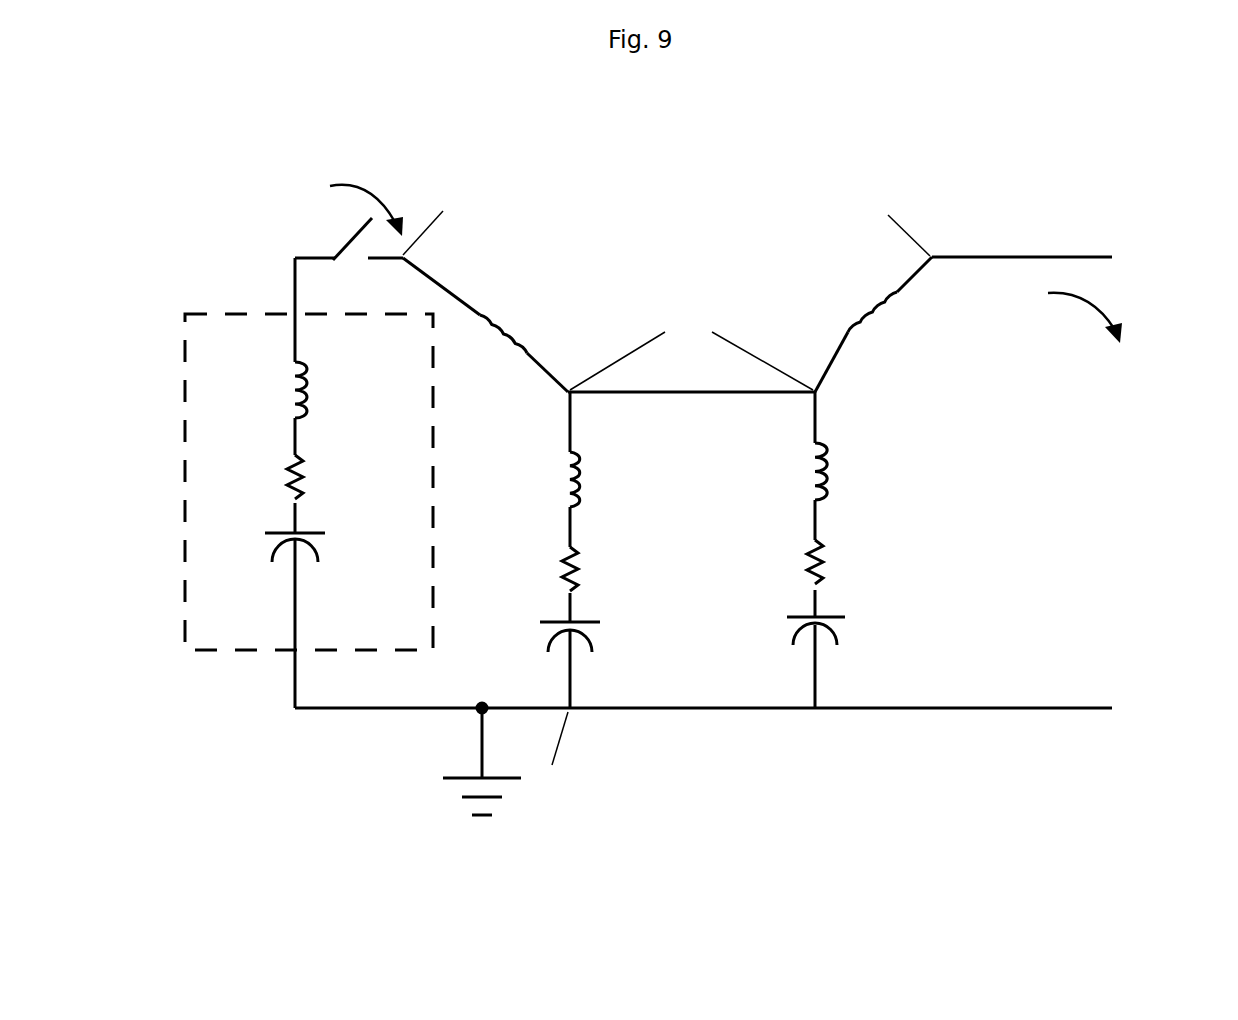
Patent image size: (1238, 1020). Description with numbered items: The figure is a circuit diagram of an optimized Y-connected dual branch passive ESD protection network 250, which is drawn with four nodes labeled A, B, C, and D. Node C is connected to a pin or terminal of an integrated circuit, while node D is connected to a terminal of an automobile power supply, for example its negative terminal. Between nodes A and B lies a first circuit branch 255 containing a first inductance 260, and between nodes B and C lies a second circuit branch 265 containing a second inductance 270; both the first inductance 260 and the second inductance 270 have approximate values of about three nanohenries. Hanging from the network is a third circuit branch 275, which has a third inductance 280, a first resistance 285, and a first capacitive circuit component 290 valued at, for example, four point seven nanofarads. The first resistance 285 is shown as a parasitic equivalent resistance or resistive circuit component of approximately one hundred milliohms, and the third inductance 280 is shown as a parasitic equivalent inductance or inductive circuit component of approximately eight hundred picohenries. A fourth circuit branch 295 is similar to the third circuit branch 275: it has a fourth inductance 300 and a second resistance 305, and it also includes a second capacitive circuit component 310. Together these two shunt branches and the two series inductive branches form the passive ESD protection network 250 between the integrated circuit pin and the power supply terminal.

The dual branch passive ESD protection network 250 is at (530, 114).
The first circuit branch 255 is at (548, 258).
The first inductance 260 is at (528, 313).
The second circuit branch 265 is at (815, 255).
The second inductance 270 is at (848, 300).
The third circuit branch 275 is at (535, 483).
The third inductance 280 is at (597, 476).
The first resistance 285 is at (585, 570).
The first capacitive circuit component 290 is at (548, 626).
The fourth circuit branch 295 is at (862, 418).
The fourth inductance 300 is at (842, 473).
The second resistance 305 is at (830, 565).
The second capacitive circuit component 310 is at (822, 640).